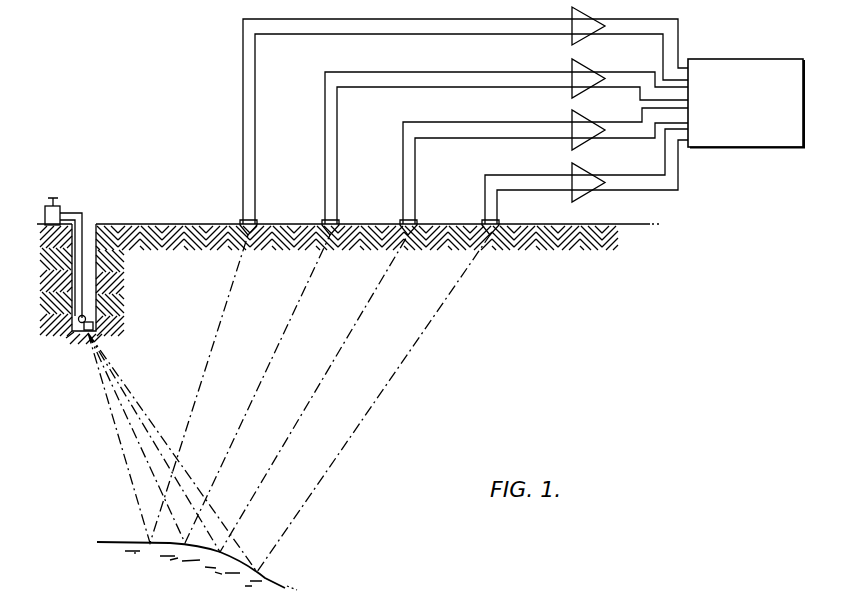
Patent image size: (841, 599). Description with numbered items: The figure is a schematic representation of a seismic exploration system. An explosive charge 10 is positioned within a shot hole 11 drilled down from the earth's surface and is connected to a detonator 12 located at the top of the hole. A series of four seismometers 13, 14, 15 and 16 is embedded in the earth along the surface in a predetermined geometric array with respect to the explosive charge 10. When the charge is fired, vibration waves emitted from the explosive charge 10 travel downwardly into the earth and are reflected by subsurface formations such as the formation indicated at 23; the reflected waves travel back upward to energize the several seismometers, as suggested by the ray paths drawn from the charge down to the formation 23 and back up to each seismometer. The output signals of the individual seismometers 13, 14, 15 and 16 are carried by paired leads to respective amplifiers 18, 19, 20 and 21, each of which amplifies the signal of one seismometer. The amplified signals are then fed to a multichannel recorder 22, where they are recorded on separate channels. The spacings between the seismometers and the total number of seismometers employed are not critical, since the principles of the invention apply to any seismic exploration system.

The explosive charge 10 is at (94, 321).
The shot hole 11 is at (93, 237).
The detonator 12 is at (62, 213).
The seismometer 13 is at (254, 222).
The seismometer 14 is at (336, 222).
The seismometer 15 is at (414, 222).
The seismometer 16 is at (497, 222).
The amplifier 18 is at (586, 14).
The amplifier 19 is at (586, 66).
The amplifier 20 is at (589, 118).
The amplifier 21 is at (586, 171).
The multichannel recorder 22 is at (717, 60).
The formation 23 is at (265, 578).